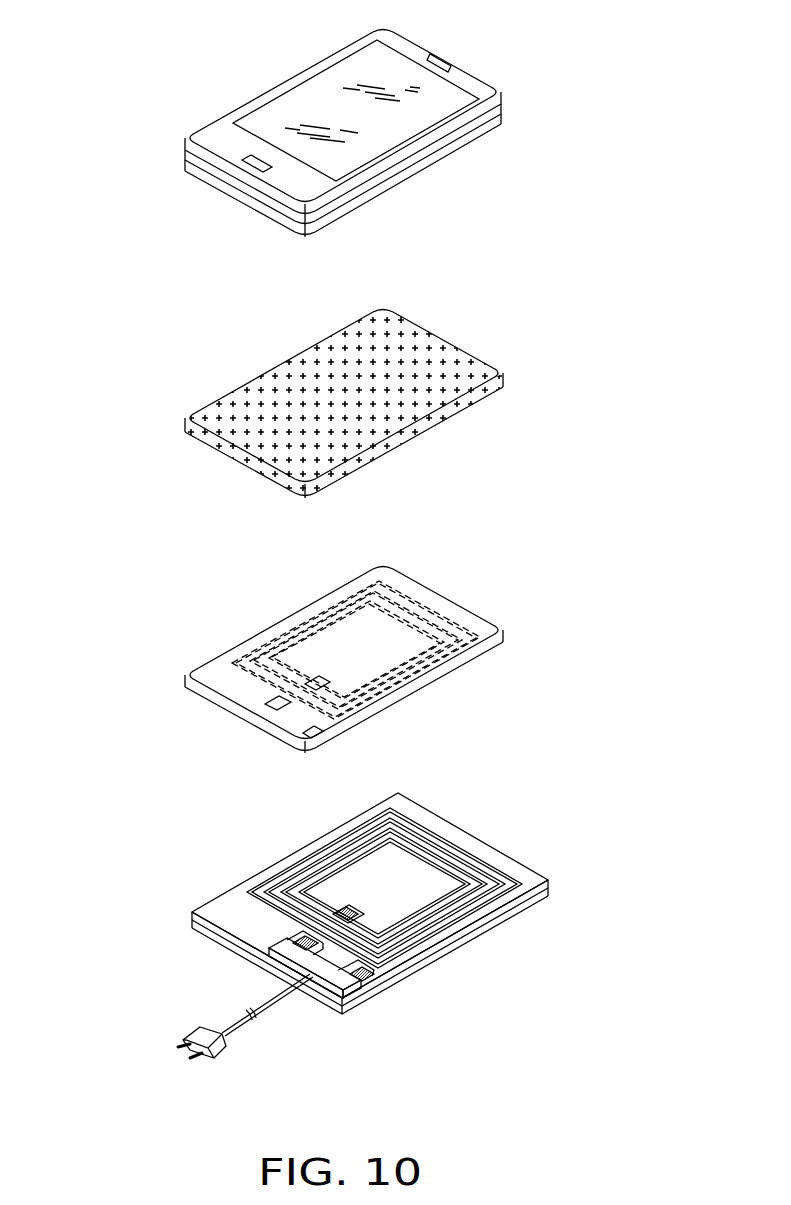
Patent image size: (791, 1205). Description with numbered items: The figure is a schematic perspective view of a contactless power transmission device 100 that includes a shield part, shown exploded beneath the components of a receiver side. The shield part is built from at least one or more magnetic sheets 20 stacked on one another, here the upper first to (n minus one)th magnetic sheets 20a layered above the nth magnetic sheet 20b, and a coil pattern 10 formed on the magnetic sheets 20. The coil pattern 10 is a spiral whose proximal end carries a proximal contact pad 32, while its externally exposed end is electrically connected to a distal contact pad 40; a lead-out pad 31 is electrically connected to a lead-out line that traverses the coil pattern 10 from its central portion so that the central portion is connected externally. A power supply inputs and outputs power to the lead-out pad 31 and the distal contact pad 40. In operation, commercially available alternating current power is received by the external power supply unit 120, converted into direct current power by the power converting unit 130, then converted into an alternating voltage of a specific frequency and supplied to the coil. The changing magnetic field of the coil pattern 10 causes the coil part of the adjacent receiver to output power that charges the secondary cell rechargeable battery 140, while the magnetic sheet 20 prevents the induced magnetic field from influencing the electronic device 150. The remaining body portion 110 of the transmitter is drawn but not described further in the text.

The contactless power transmission device 100 is at (158, 824).
The charging pad body 110 is at (402, 881).
The external power supply unit 120 is at (197, 1037).
The power converting unit 130 is at (328, 1002).
The secondary cell rechargeable battery 140 is at (272, 393).
The electronic device 150 is at (293, 105).
The coil pattern 10 is at (437, 617).
The magnetic sheet 20 is at (497, 643).
The first to (n-1)th magnetic sheets 20a is at (520, 872).
The nth magnetic sheet 20b is at (530, 903).
The lead-out pad 31 is at (296, 940).
The proximal contact pad 32 is at (340, 912).
The distal contact pad 40 is at (366, 981).